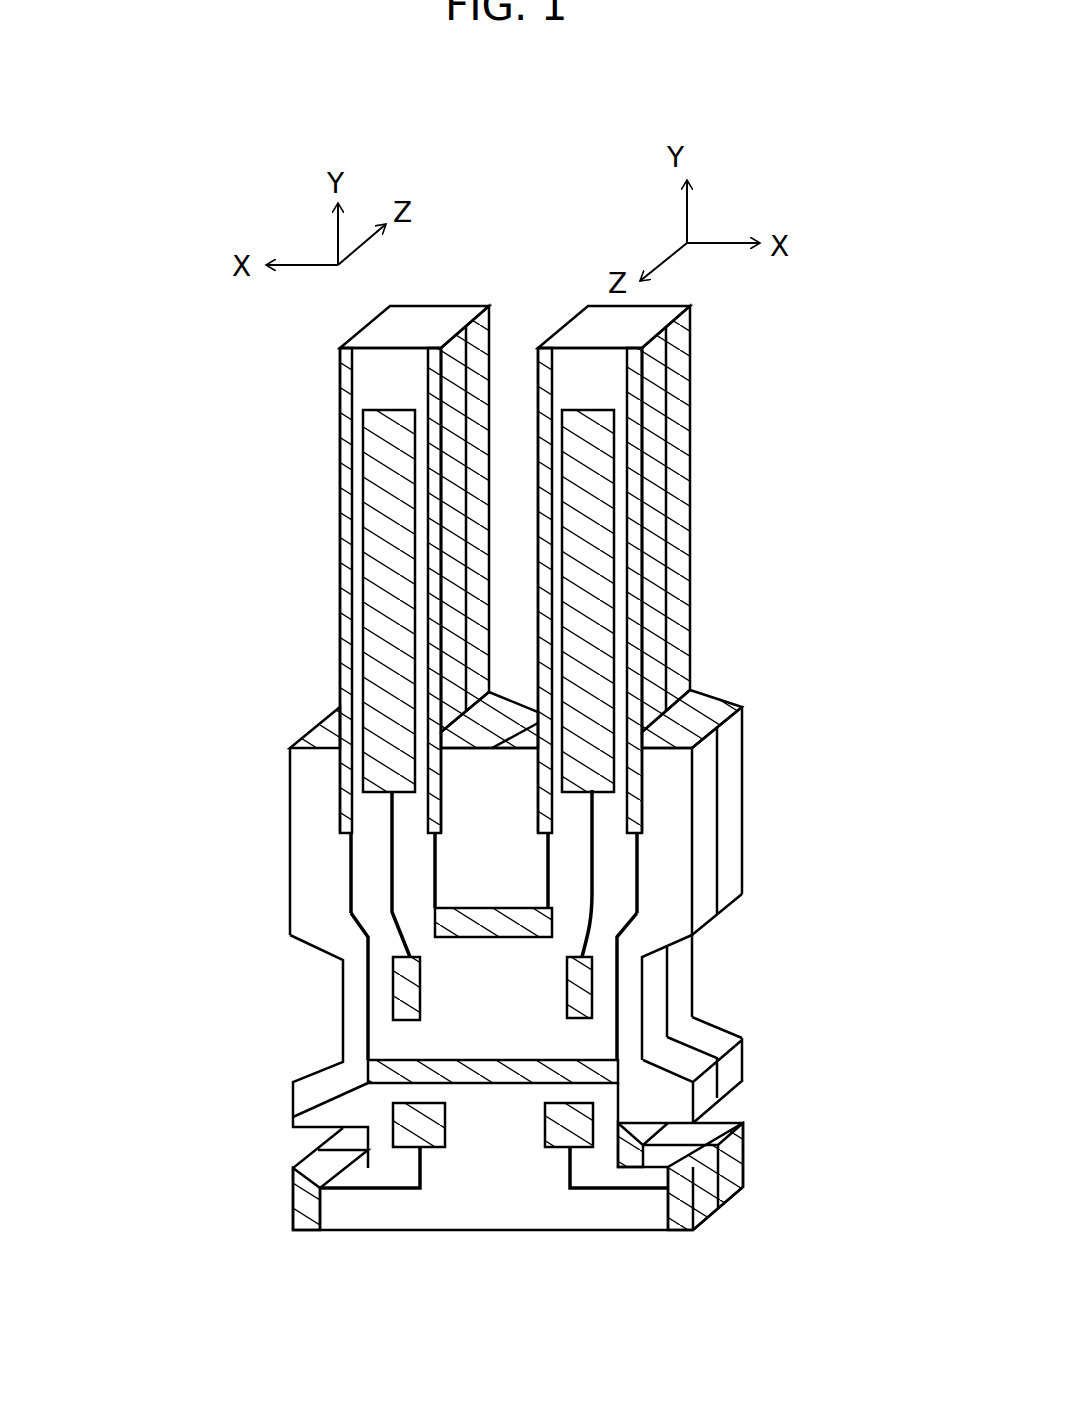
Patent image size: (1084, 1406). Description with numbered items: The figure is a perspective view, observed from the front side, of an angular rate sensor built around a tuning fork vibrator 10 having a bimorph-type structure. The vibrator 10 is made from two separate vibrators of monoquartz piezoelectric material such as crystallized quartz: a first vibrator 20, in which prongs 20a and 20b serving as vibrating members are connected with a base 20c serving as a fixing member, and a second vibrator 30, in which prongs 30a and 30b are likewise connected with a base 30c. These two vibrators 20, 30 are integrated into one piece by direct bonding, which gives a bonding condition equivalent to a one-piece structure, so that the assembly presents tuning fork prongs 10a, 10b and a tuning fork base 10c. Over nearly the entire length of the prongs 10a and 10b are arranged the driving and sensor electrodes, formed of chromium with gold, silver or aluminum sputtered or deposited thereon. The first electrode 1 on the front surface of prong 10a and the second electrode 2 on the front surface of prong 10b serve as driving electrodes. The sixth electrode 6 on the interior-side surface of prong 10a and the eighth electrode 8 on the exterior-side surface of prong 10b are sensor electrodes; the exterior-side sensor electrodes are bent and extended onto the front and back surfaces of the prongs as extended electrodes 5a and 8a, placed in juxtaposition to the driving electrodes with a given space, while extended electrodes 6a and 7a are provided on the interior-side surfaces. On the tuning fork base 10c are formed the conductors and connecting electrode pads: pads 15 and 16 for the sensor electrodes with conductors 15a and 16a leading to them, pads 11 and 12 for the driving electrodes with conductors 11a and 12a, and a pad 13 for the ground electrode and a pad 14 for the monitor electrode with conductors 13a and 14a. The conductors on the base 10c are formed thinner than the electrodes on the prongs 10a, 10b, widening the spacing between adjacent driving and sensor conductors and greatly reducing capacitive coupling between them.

The first electrode 1 is at (363, 465).
The second electrode 2 is at (615, 493).
The extended electrode 5a is at (340, 528).
The sixth electrode 6 is at (460, 398).
The extended electrode 6a is at (435, 518).
The extended electrode 7a is at (543, 568).
The eighth electrode 8 is at (652, 452).
The extended electrode 8a is at (630, 440).
The tuning fork vibrator 10 is at (303, 705).
The tuning fork prong 10a is at (458, 297).
The tuning fork prong 10b is at (567, 307).
The tuning fork base 10c is at (315, 825).
The connecting electrode pad 11 is at (393, 990).
The conductor 11a is at (392, 911).
The connecting electrode pad 12 is at (592, 997).
The conductor 12a is at (593, 890).
The connecting electrode pad 13 is at (433, 1150).
The conductor 13a is at (368, 1192).
The connecting electrode pad 14 is at (553, 1150).
The conductor 14a is at (627, 1190).
The connecting electrode pad 15 is at (367, 947).
The conductor 15a is at (435, 871).
The connecting electrode pad 16 is at (368, 1080).
The conductor 16a is at (350, 857).
The vibrator 20 is at (280, 780).
The prong 20a is at (362, 338).
The prong 20b is at (640, 333).
The base 20c is at (702, 757).
The vibrator 30 is at (747, 697).
The prong 30a is at (387, 317).
The prong 30b is at (652, 309).
The base 30c is at (725, 768).